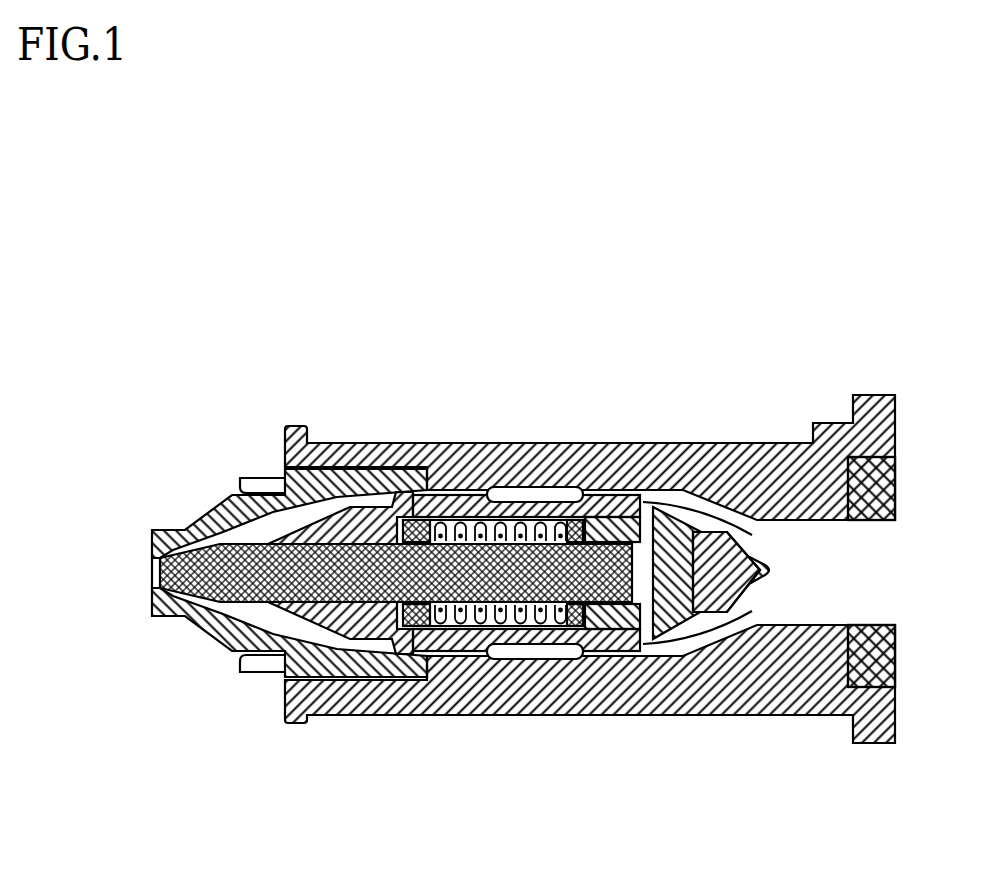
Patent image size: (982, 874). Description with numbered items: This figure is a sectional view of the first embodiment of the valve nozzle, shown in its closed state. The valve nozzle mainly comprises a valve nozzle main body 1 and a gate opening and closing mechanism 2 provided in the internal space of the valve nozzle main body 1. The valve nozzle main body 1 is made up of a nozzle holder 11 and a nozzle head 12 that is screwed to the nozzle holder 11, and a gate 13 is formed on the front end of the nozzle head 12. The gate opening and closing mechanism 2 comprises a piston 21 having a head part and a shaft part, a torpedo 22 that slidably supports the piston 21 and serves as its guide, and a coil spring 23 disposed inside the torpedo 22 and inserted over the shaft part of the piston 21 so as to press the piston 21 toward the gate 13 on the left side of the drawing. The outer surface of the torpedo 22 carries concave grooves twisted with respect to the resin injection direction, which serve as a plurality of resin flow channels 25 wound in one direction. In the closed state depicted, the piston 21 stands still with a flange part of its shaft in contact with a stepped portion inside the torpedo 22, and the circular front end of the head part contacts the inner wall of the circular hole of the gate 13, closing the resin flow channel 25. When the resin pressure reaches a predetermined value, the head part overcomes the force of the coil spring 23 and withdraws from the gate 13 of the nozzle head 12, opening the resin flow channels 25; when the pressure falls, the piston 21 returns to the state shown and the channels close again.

The valve nozzle main body 1 is at (337, 330).
The nozzle holder 11 is at (335, 443).
The nozzle head 12 is at (233, 495).
The gate 13 is at (148, 575).
The gate opening and closing mechanism 2 is at (467, 497).
The piston 21 is at (565, 615).
The torpedo 22 is at (360, 622).
The coil spring 23 is at (483, 618).
The resin flow channel 25 is at (392, 647).